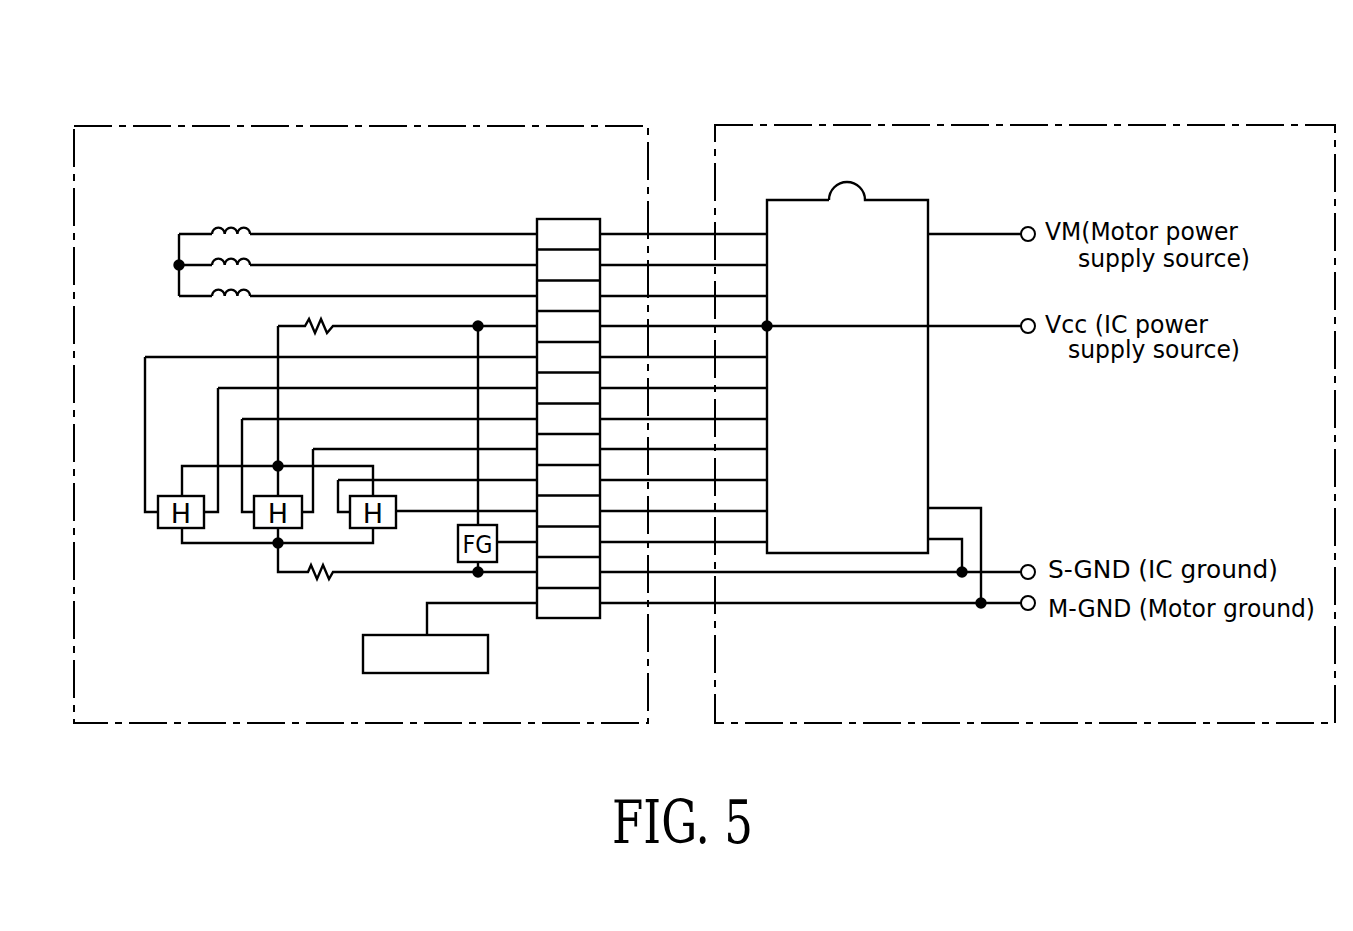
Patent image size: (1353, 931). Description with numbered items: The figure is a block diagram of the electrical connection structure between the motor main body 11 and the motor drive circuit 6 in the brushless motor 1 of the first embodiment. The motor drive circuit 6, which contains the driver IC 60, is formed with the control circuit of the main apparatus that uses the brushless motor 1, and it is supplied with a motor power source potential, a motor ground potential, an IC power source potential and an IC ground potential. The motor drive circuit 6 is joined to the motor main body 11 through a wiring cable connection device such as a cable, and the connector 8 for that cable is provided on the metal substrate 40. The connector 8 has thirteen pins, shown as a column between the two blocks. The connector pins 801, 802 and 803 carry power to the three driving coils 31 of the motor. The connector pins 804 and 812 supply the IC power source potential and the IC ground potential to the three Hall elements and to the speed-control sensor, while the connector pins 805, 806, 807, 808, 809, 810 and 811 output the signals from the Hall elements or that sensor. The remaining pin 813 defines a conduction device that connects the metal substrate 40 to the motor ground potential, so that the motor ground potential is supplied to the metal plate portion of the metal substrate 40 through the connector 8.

The brushless motor 1 is at (953, 68).
The motor main body 11 is at (263, 126).
The motor drive circuit 6 is at (1150, 125).
The driving coils 31 is at (250, 292).
The connector 8 is at (775, 447).
The connector pin 801 is at (652, 234).
The connector pin 802 is at (652, 265).
The connector pin 803 is at (652, 296).
The connector pin 804 is at (652, 326).
The connector pin 805 is at (652, 357).
The connector pin 806 is at (652, 388).
The connector pin 807 is at (652, 419).
The connector pin 808 is at (652, 449).
The connector pin 809 is at (652, 480).
The connector pin 810 is at (652, 511).
The connector pin 811 is at (652, 542).
The connector pin 812 is at (779, 572).
The connector pin 813 is at (783, 603).
The driver IC 60 is at (898, 200).
The metal substrate 40 is at (450, 638).